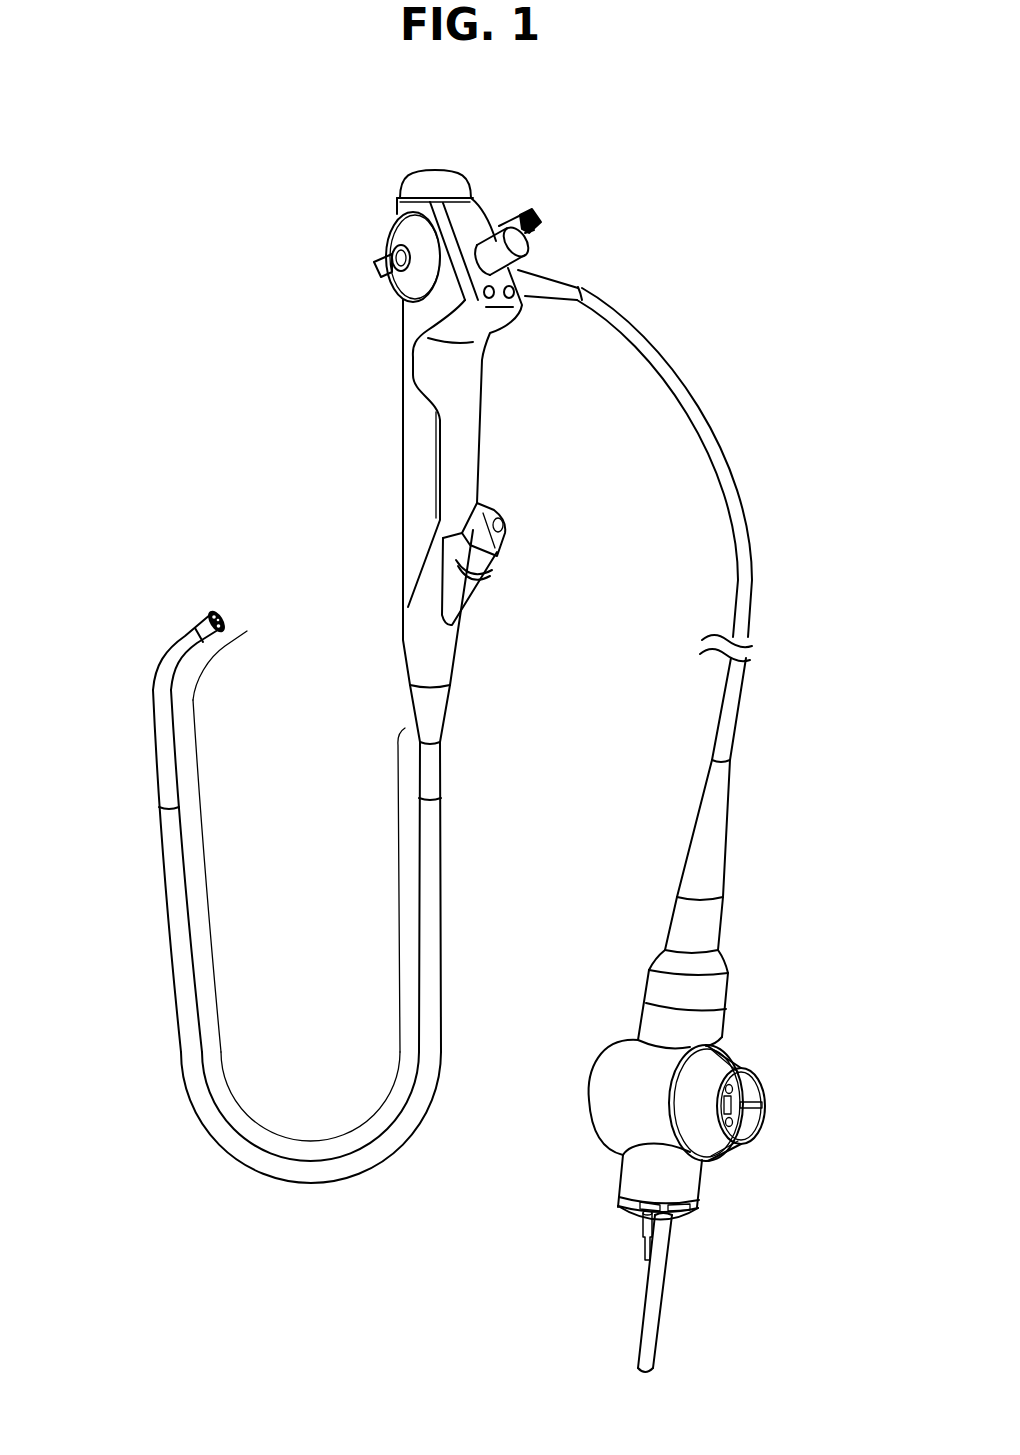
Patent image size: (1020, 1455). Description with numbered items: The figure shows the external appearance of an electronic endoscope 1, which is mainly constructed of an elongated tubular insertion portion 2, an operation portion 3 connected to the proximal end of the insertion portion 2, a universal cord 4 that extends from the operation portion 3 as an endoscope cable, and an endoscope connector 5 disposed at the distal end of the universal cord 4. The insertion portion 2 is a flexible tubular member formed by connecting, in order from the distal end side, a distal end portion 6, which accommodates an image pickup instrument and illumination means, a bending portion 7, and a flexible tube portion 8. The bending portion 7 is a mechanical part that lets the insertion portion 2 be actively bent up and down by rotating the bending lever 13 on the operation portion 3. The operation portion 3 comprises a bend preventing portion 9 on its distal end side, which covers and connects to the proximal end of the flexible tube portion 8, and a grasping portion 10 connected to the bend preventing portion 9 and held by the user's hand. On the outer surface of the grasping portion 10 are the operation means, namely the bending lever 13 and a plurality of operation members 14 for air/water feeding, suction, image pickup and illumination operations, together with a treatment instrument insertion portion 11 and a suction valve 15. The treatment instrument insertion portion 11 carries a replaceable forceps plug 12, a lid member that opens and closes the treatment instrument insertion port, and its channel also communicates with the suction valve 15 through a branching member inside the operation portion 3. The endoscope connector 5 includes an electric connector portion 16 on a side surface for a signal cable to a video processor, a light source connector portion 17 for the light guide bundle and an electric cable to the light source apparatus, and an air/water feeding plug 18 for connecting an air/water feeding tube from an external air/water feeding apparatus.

The endoscope 1 is at (206, 176).
The insertion portion 2 is at (311, 1115).
The operation portion 3 is at (333, 464).
The universal cord 4 is at (702, 414).
The endoscope connector 5 is at (585, 1093).
The distal end portion 6 is at (204, 611).
The bending portion 7 is at (148, 697).
The flexible tube portion 8 is at (381, 1163).
The bend preventing portion 9 is at (451, 707).
The grasping portion 10 is at (488, 440).
The treatment instrument insertion portion 11 is at (480, 590).
The forceps plug 12 is at (503, 547).
The bending lever 13 is at (372, 267).
The operation members 14 is at (490, 300).
The suction valve 15 is at (513, 212).
The electric connector portion 16 is at (778, 1113).
The light source connector portion 17 is at (687, 1248).
The air/water feeding plug 18 is at (637, 1240).